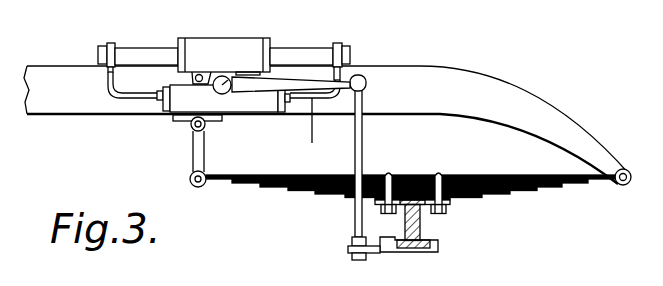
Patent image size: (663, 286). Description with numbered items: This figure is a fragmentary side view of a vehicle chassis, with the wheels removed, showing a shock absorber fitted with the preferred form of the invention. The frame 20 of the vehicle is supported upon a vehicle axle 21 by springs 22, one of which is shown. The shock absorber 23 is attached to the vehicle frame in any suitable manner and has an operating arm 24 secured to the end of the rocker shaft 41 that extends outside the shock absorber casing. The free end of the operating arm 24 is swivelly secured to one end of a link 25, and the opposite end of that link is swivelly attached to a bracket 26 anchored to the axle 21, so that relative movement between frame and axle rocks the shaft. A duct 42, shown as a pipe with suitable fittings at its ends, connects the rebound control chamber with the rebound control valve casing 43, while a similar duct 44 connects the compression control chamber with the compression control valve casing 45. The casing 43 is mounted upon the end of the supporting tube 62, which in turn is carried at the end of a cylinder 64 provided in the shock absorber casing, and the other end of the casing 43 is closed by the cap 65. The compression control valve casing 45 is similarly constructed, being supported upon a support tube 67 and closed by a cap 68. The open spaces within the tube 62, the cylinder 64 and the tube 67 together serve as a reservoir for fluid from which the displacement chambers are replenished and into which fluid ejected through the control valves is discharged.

The frame 20 is at (541, 112).
The vehicle axle 21 is at (425, 222).
The springs 22 is at (486, 175).
The shock absorber 23 is at (248, 100).
The operating arm 24 is at (345, 86).
The link 25 is at (366, 136).
The bracket 26 is at (388, 248).
The rocker shaft 41 is at (210, 93).
The duct 42 is at (105, 94).
The rebound control valve casing 43 is at (115, 43).
The duct 44 is at (312, 138).
The compression control valve casing 45 is at (345, 43).
The supporting tube 62 is at (157, 48).
The cylinder 64 is at (233, 38).
The cap 65 is at (98, 52).
The support tube 67 is at (303, 48).
The cap 68 is at (350, 52).